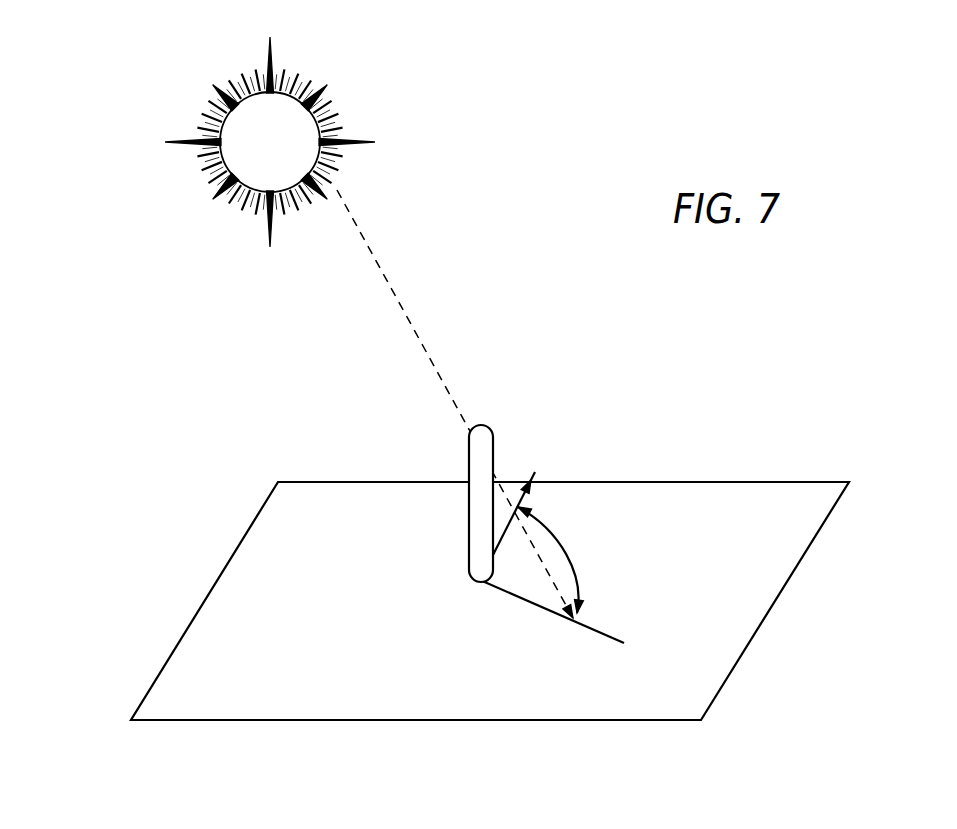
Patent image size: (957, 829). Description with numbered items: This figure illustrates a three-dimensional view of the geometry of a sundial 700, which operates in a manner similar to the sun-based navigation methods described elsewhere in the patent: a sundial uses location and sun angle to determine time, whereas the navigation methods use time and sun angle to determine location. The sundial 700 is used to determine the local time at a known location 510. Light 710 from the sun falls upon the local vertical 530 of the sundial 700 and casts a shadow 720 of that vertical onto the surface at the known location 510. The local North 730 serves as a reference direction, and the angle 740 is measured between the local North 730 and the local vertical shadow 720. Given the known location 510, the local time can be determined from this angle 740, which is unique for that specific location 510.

The sundial 700 is at (780, 717).
The light 710 is at (417, 338).
The shadow 720 is at (492, 585).
The local North 730 is at (563, 462).
The angle 740 is at (568, 548).
The local vertical 530 is at (463, 477).
The known location 510 is at (457, 575).